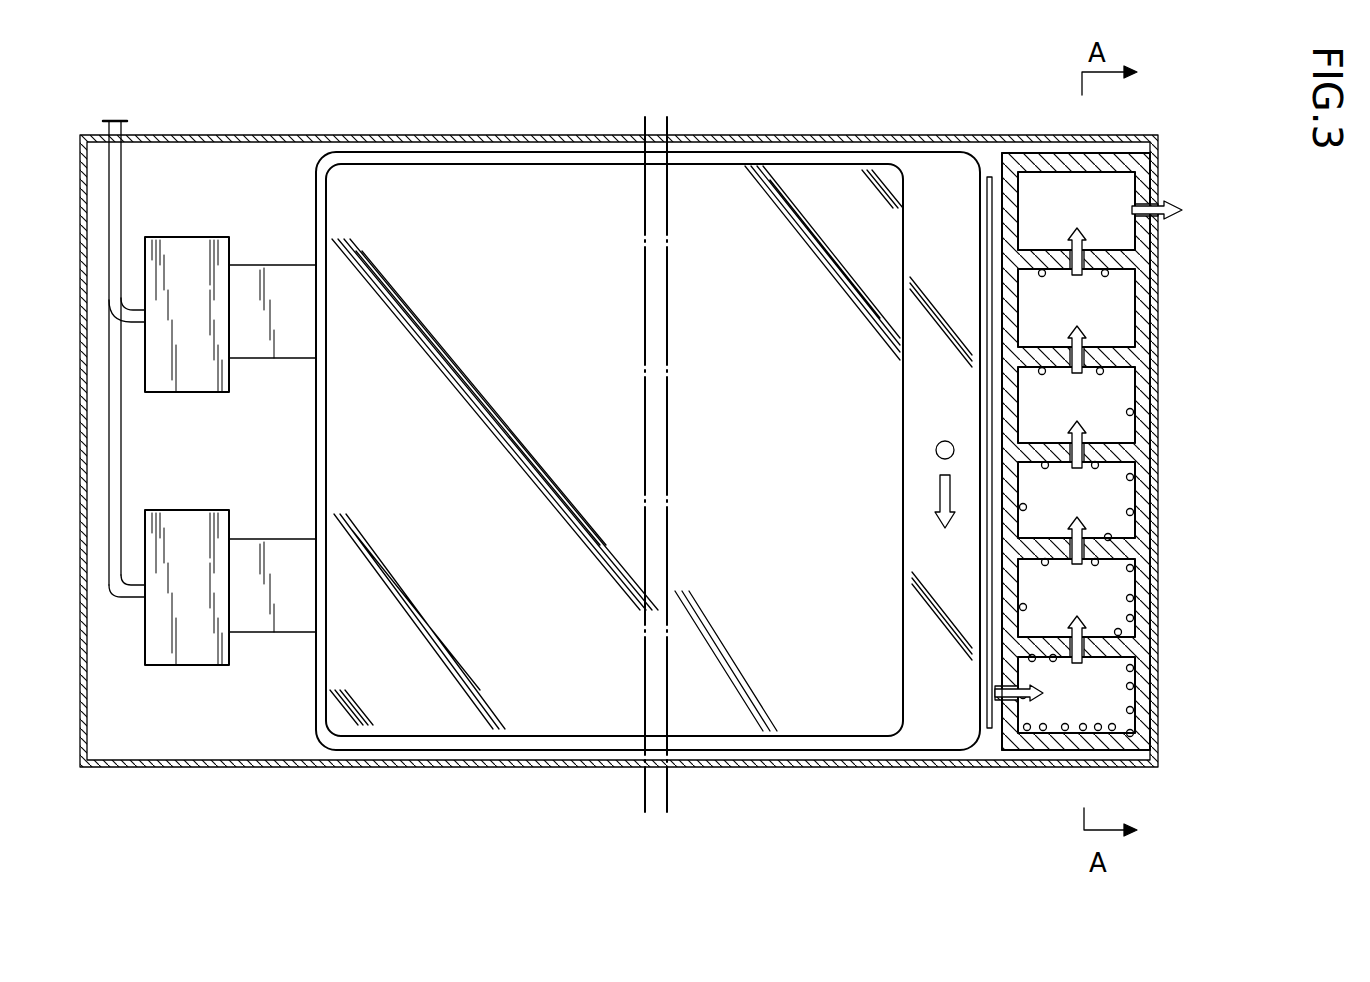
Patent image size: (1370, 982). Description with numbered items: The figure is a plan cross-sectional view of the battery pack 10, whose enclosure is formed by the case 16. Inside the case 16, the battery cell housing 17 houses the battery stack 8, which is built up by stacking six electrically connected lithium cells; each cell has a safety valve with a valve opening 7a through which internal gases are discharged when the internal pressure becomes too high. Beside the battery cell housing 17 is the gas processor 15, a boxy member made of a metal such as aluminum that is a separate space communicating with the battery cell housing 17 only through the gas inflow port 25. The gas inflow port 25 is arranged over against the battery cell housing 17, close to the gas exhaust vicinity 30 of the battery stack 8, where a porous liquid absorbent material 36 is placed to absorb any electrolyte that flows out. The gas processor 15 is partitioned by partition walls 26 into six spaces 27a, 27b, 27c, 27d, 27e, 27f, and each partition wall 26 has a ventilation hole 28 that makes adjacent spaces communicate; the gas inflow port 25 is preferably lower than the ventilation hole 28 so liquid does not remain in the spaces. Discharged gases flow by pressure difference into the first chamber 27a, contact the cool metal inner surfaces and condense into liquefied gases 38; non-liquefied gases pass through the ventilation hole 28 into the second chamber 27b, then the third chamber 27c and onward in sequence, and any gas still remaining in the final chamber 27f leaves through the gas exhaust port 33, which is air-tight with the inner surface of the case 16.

The battery pack 10 is at (313, 789).
The gas processor 15 is at (1015, 756).
The case 16 is at (430, 768).
The battery cell housing 17 is at (210, 715).
The battery stack 8 is at (737, 720).
The valve opening 7a is at (942, 458).
The gas inflow port 25 is at (995, 697).
The partition wall 26 is at (1100, 556).
The first chamber 27a is at (1103, 692).
The second chamber 27b is at (1102, 605).
The third chamber 27c is at (1113, 473).
The space 27d is at (1123, 389).
The space 27e is at (1122, 330).
The final chamber 27f is at (1122, 191).
The ventilation hole 28 is at (1082, 568).
The gas exhaust vicinity 30 is at (967, 430).
The gas exhaust port 33 is at (1168, 207).
The liquid absorbent material 36 is at (990, 330).
The liquefied gases 38 is at (1134, 597).